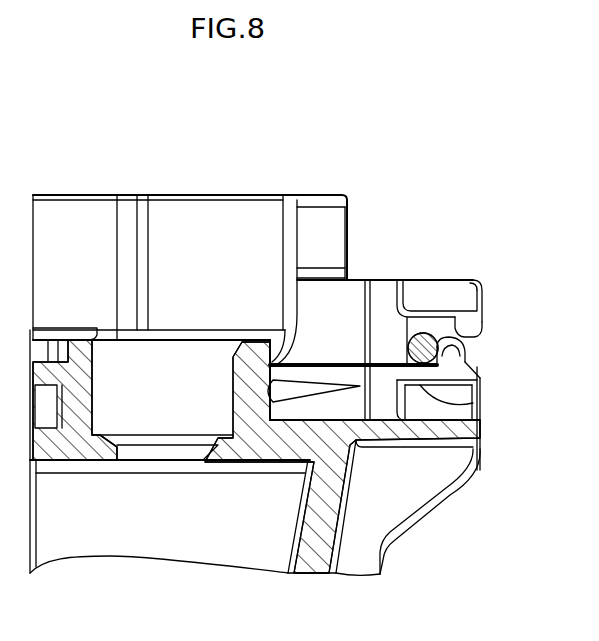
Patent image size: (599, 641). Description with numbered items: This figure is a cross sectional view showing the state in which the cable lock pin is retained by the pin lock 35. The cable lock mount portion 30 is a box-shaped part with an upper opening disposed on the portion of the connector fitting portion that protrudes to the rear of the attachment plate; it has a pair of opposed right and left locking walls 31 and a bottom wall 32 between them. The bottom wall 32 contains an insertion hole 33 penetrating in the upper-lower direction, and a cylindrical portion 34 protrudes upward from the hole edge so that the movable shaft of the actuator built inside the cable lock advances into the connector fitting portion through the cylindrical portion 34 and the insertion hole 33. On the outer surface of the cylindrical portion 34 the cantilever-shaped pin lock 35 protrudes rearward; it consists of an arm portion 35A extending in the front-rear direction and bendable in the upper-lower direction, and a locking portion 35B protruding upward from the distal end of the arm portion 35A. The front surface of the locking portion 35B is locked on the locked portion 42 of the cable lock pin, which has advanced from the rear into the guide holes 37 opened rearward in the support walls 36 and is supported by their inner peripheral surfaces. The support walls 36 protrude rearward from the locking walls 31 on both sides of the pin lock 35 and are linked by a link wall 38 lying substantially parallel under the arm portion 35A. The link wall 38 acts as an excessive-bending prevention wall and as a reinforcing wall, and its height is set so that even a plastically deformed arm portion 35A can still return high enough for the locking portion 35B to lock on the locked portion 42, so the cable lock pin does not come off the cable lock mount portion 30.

The cable lock mount portion 30 is at (281, 152).
The locking wall 31 is at (193, 208).
The bottom wall 32 is at (92, 455).
The insertion hole 33 is at (165, 452).
The cylindrical portion 34 is at (63, 330).
The pin lock 35 is at (476, 405).
The arm portion 35A is at (349, 367).
The locking portion 35B is at (465, 355).
The support wall 36 is at (400, 333).
The guide hole 37 is at (480, 337).
The link wall 38 is at (437, 433).
The locked portion 42 is at (420, 340).